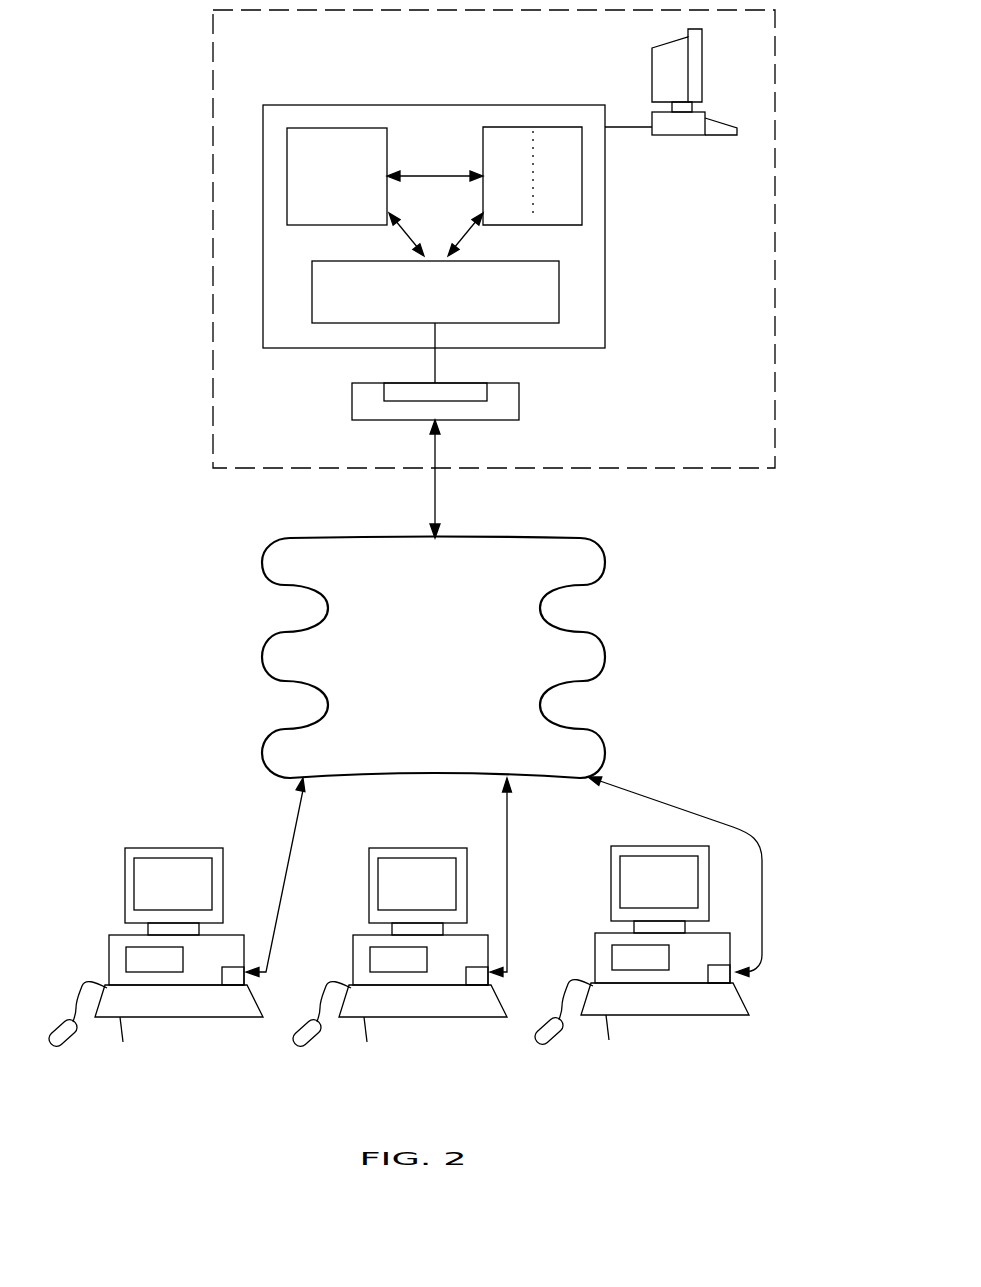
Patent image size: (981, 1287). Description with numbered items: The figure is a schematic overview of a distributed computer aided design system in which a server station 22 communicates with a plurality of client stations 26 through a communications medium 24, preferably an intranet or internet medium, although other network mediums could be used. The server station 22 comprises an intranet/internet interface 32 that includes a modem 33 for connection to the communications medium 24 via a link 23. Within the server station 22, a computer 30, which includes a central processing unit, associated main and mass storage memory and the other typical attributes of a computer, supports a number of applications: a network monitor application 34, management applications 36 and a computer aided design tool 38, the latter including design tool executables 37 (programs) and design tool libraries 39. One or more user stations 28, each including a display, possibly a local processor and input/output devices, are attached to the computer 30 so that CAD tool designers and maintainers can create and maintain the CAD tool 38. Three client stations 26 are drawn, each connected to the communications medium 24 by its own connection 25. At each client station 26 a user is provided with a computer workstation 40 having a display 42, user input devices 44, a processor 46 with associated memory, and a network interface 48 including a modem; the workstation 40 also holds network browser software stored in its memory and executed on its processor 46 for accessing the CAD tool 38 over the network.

The server station 22 is at (210, 307).
The link 23 is at (437, 503).
The communications medium 24 is at (268, 647).
The communication link 25 is at (294, 828).
The client station 26 is at (423, 958).
The user station 28 is at (703, 67).
The computer 30 is at (263, 170).
The intranet/internet interface 32 is at (423, 401).
The modem 33 is at (473, 394).
The network monitor application 34 is at (559, 290).
The management applications 36 is at (355, 140).
The design tool executables 37 is at (503, 135).
The computer aided design tool 38 is at (532, 123).
The design tool libraries 39 is at (557, 146).
The computer workstation 40 is at (109, 955).
The display 42 is at (158, 843).
The user input devices 44 is at (74, 1040).
The processor 46 is at (135, 955).
The network interface 48 is at (242, 977).